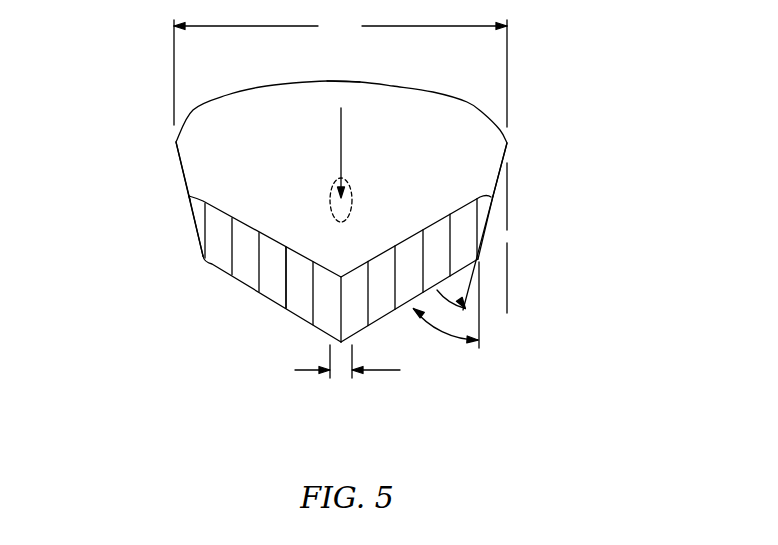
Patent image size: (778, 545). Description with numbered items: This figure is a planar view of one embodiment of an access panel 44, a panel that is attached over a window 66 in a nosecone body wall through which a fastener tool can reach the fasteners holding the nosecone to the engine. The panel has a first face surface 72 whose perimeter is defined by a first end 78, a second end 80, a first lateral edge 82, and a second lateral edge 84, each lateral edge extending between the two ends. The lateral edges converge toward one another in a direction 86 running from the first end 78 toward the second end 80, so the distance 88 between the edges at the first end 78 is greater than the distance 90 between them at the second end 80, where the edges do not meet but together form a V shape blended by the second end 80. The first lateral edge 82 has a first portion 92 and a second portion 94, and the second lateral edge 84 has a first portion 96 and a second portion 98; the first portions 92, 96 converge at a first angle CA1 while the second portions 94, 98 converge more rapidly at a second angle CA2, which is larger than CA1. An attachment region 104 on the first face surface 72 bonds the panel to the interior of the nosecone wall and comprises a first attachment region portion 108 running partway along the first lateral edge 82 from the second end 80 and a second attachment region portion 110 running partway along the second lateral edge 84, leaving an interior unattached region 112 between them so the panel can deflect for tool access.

The access panel 44 is at (340, 237).
The window 66 is at (330, 211).
The first face surface 72 is at (260, 157).
The first end 78 is at (364, 82).
The second end 80 is at (341, 346).
The first lateral edge 82 is at (169, 196).
The second lateral edge 84 is at (509, 195).
The direction 86 is at (342, 153).
The distance 88 is at (340, 163).
The distance 90 is at (385, 373).
The first portion 92 is at (195, 234).
The second portion 94 is at (316, 330).
The first portion 96 is at (484, 237).
The second portion 98 is at (365, 333).
The attachment region 104 is at (269, 262).
The first attachment region portion 108 is at (283, 277).
The second attachment region portion 110 is at (408, 260).
The interior unattached region 112 is at (318, 260).
The first angle CA1 is at (509, 311).
The second angle CA2 is at (445, 336).